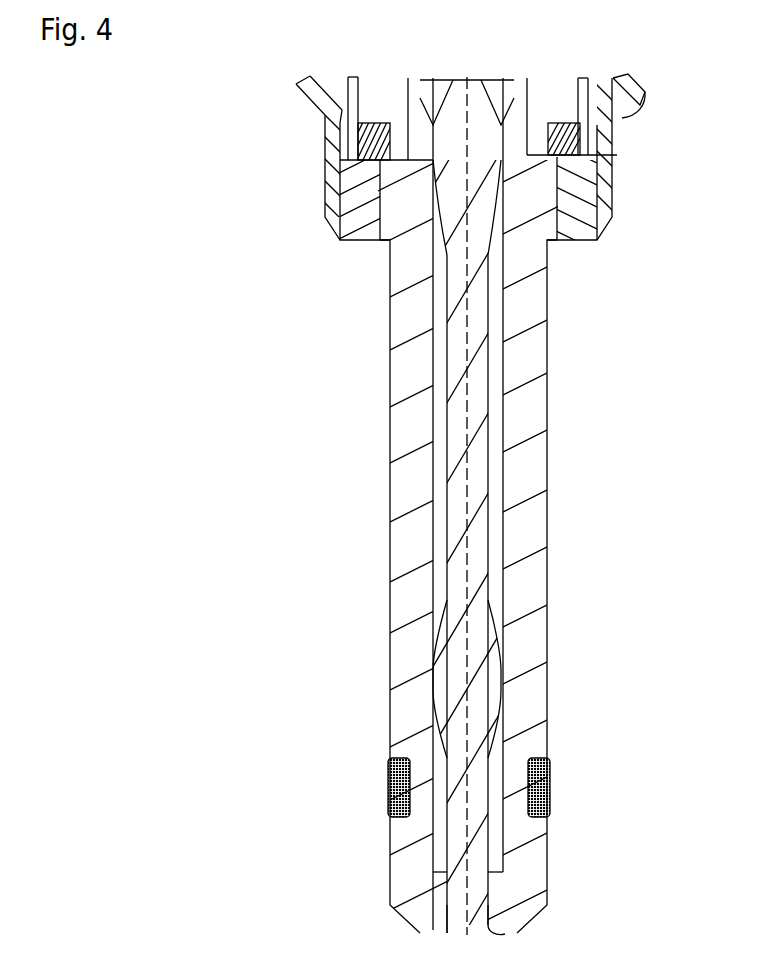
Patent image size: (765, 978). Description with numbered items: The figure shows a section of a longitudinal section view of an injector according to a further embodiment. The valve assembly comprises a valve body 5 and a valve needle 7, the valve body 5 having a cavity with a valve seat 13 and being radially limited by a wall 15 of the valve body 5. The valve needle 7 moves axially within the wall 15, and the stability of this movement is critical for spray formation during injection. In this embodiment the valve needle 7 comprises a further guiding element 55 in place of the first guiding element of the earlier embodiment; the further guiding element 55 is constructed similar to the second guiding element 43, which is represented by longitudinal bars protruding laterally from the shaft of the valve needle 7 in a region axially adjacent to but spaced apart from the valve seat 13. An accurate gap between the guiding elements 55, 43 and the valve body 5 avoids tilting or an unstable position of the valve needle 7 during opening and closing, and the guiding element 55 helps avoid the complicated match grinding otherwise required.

The valve body 5 is at (417, 565).
The valve needle 7 is at (547, 501).
The valve seat 13 is at (512, 927).
The wall 15 is at (368, 505).
The second guiding element 43 is at (424, 676).
The further guiding element 55 is at (425, 184).